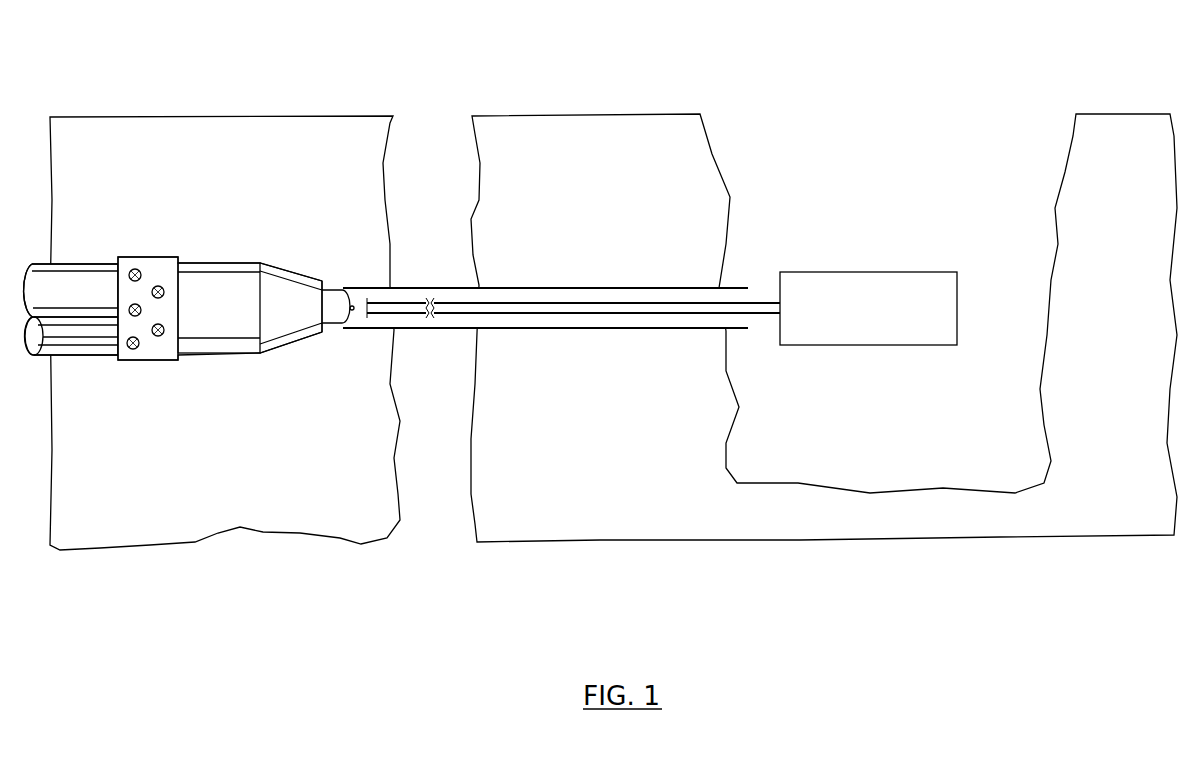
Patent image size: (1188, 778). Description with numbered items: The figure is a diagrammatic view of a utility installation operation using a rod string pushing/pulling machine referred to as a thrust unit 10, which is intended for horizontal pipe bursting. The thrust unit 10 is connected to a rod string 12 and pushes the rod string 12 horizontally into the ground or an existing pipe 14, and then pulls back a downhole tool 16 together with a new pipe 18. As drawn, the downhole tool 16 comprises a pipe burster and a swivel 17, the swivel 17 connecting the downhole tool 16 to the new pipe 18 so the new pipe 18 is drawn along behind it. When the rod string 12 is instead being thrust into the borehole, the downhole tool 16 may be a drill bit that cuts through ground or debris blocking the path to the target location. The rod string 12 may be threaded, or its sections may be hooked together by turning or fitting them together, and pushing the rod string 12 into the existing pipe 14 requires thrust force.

The thrust unit 10 is at (882, 297).
The rod string 12 is at (560, 307).
The existing pipe 14 is at (547, 287).
The downhole tool 16 is at (232, 293).
The swivel 17 is at (368, 288).
The new pipe 18 is at (68, 285).